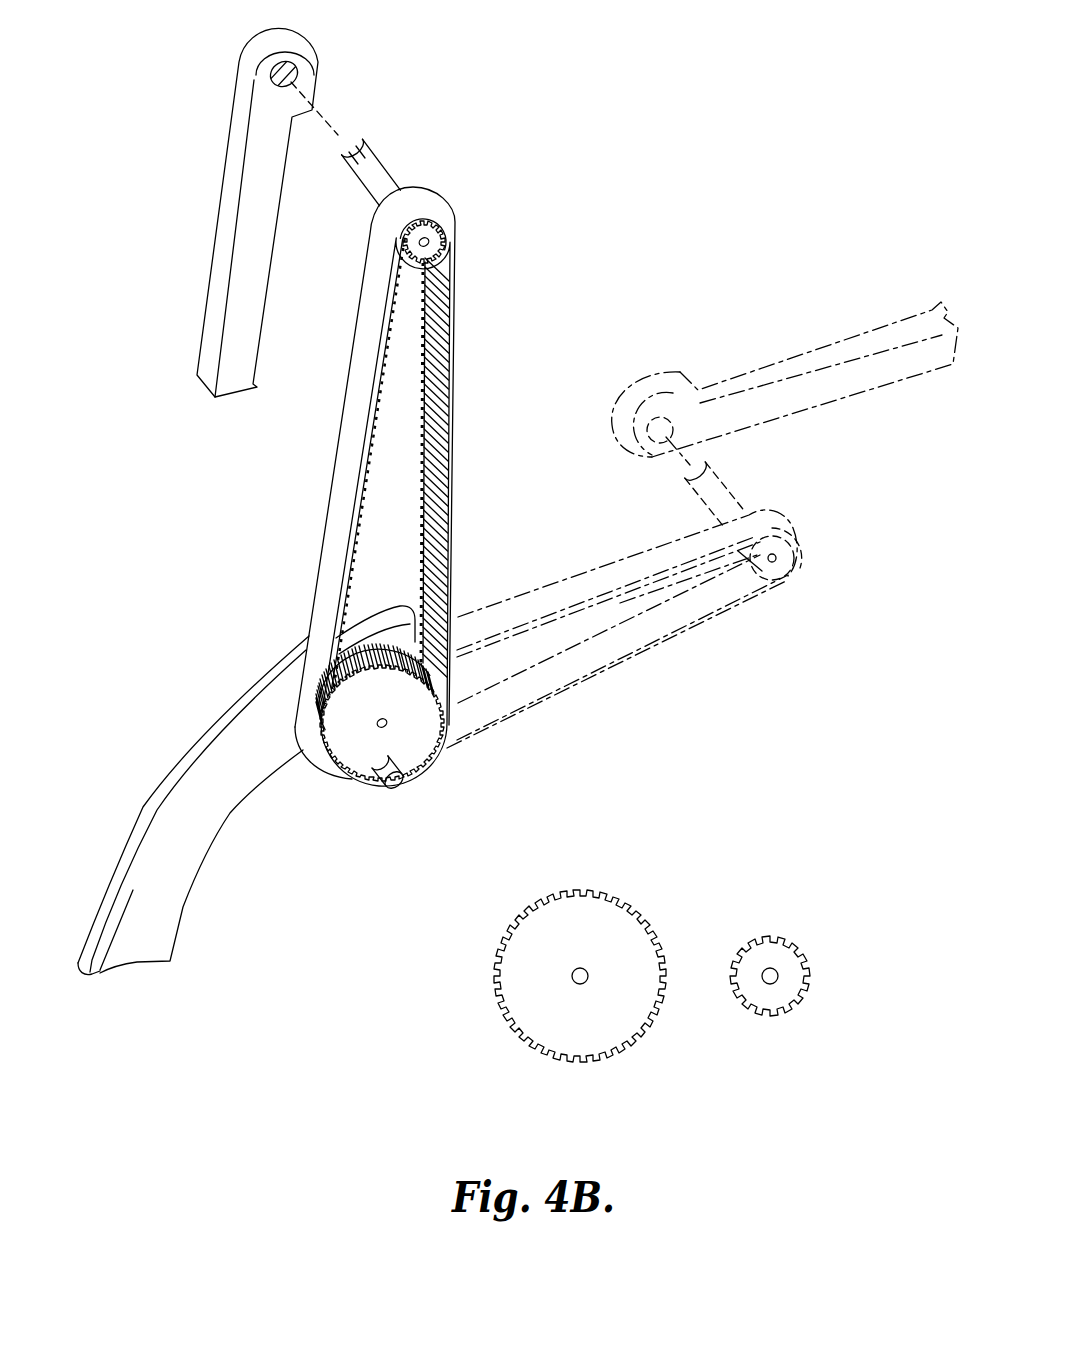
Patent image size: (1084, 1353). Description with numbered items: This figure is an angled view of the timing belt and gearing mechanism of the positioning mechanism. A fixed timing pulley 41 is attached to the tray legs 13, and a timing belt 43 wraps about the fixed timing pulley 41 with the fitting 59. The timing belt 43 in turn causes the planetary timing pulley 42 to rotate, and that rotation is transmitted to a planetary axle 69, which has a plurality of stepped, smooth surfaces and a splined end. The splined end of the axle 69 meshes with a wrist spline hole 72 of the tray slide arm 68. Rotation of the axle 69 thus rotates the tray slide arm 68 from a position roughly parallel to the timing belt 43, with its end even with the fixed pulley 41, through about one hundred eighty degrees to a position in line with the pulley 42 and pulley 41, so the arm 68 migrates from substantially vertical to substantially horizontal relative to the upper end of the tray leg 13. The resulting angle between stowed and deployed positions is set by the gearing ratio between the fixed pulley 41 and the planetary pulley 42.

The tray legs 13 is at (194, 753).
The timing pulley 41 is at (408, 732).
The planetary timing pulley 42 is at (786, 558).
The timing belt 43 is at (320, 588).
The fitting 59 is at (398, 790).
The tray slide arm 68 is at (213, 317).
The planetary axle 69 is at (380, 162).
The wrist spline hole 72 is at (655, 447).